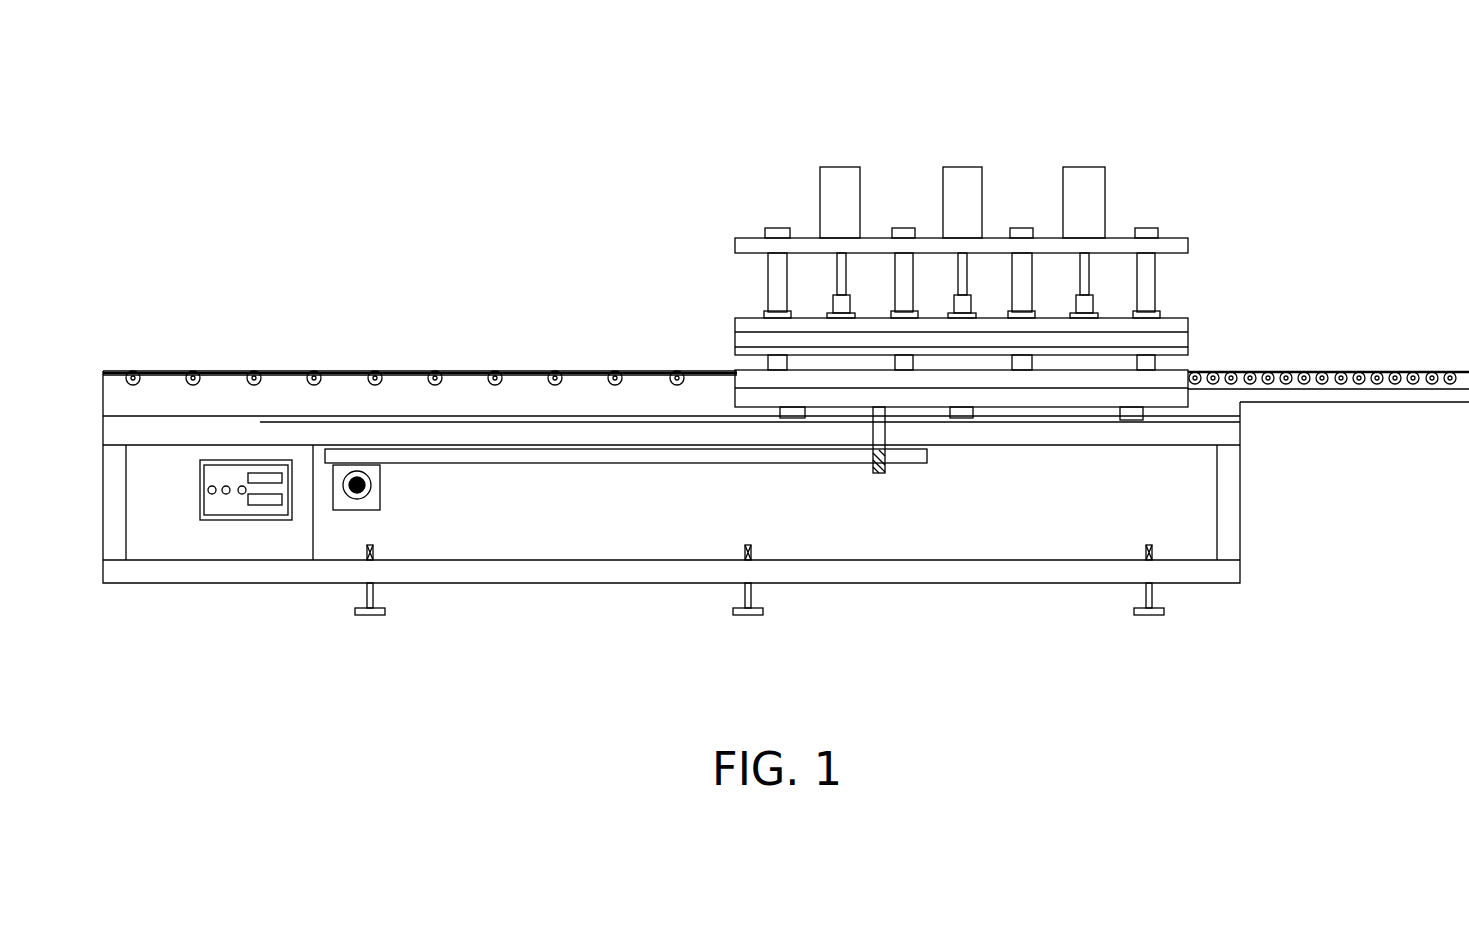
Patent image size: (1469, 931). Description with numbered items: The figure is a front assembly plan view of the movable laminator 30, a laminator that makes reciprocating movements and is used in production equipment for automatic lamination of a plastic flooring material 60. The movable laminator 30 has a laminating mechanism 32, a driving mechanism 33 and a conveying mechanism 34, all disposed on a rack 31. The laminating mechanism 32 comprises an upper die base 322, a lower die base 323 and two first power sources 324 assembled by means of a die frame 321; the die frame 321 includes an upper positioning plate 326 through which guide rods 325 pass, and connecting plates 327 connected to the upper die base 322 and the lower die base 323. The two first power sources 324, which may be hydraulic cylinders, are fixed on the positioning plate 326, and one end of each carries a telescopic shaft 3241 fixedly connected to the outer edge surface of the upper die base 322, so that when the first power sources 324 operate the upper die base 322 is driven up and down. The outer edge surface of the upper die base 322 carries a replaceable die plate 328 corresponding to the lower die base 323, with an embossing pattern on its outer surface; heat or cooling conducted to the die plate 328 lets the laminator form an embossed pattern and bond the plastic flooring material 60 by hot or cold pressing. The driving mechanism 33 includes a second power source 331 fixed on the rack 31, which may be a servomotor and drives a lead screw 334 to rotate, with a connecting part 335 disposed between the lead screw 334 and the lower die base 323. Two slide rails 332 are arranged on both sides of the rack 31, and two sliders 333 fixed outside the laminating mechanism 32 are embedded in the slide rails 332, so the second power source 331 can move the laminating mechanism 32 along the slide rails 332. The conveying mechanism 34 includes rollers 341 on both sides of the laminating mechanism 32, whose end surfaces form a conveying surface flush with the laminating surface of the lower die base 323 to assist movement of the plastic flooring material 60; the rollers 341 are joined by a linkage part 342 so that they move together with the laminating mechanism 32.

The movable laminator 30 is at (1343, 112).
The rack 31 is at (245, 565).
The laminating mechanism 32 is at (757, 178).
The driving mechanism 33 is at (750, 558).
The conveying mechanism 34 is at (420, 311).
The plastic flooring material 60 is at (1452, 370).
The die frame 321 is at (1050, 289).
The upper die base 322 is at (745, 353).
The lower die base 323 is at (1038, 375).
The first power source 324 is at (1084, 183).
The telescopic shaft 3241 is at (960, 270).
The guide rod 325 is at (1155, 278).
The upper positioning plate 326 is at (1165, 247).
The connecting plate 327 is at (1188, 325).
The die plate 328 is at (745, 342).
The second power source 331 is at (365, 495).
The slide rail 332 is at (603, 415).
The slider 333 is at (780, 416).
The lead screw 334 is at (528, 458).
The connecting part 335 is at (873, 473).
The roller 341 is at (255, 370).
The linkage part 342 is at (252, 278).